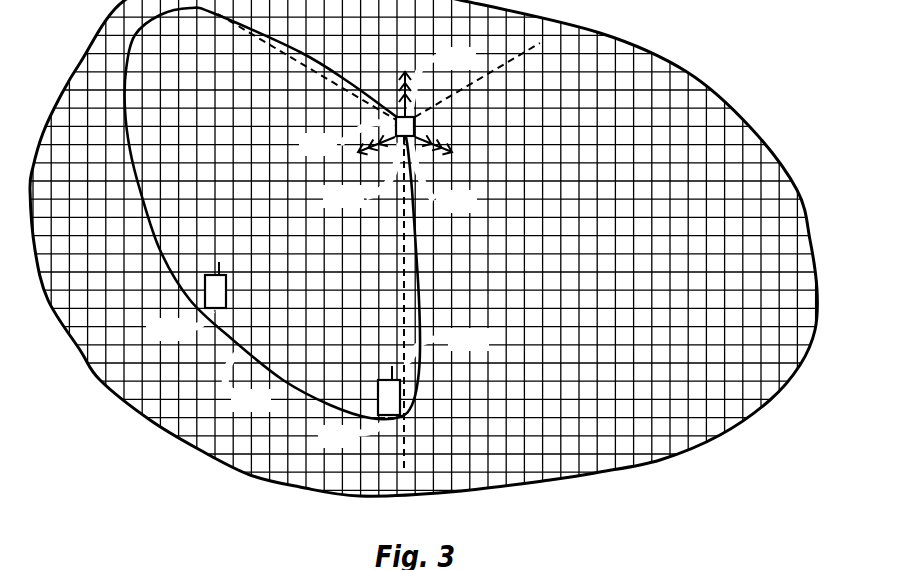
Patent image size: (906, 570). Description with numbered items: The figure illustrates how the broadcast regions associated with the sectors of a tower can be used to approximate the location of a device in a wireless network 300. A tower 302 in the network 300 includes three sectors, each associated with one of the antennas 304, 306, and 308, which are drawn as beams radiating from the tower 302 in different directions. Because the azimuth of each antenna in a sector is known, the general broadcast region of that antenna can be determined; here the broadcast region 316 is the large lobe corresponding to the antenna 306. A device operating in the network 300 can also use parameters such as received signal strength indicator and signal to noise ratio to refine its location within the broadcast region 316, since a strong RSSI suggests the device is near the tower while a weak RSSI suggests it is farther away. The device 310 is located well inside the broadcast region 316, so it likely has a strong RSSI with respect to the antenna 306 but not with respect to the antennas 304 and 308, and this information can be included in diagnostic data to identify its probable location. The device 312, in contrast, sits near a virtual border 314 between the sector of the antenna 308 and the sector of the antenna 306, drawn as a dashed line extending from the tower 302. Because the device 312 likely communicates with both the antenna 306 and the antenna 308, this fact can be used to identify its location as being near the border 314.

The wireless network 300 is at (730, 100).
The tower 302 is at (399, 140).
The antenna 304 is at (410, 110).
The antenna 306 is at (396, 132).
The antenna 308 is at (412, 140).
The device 310 is at (213, 309).
The device 312 is at (389, 419).
The virtual border 314 is at (404, 363).
The broadcast region 316 is at (240, 352).